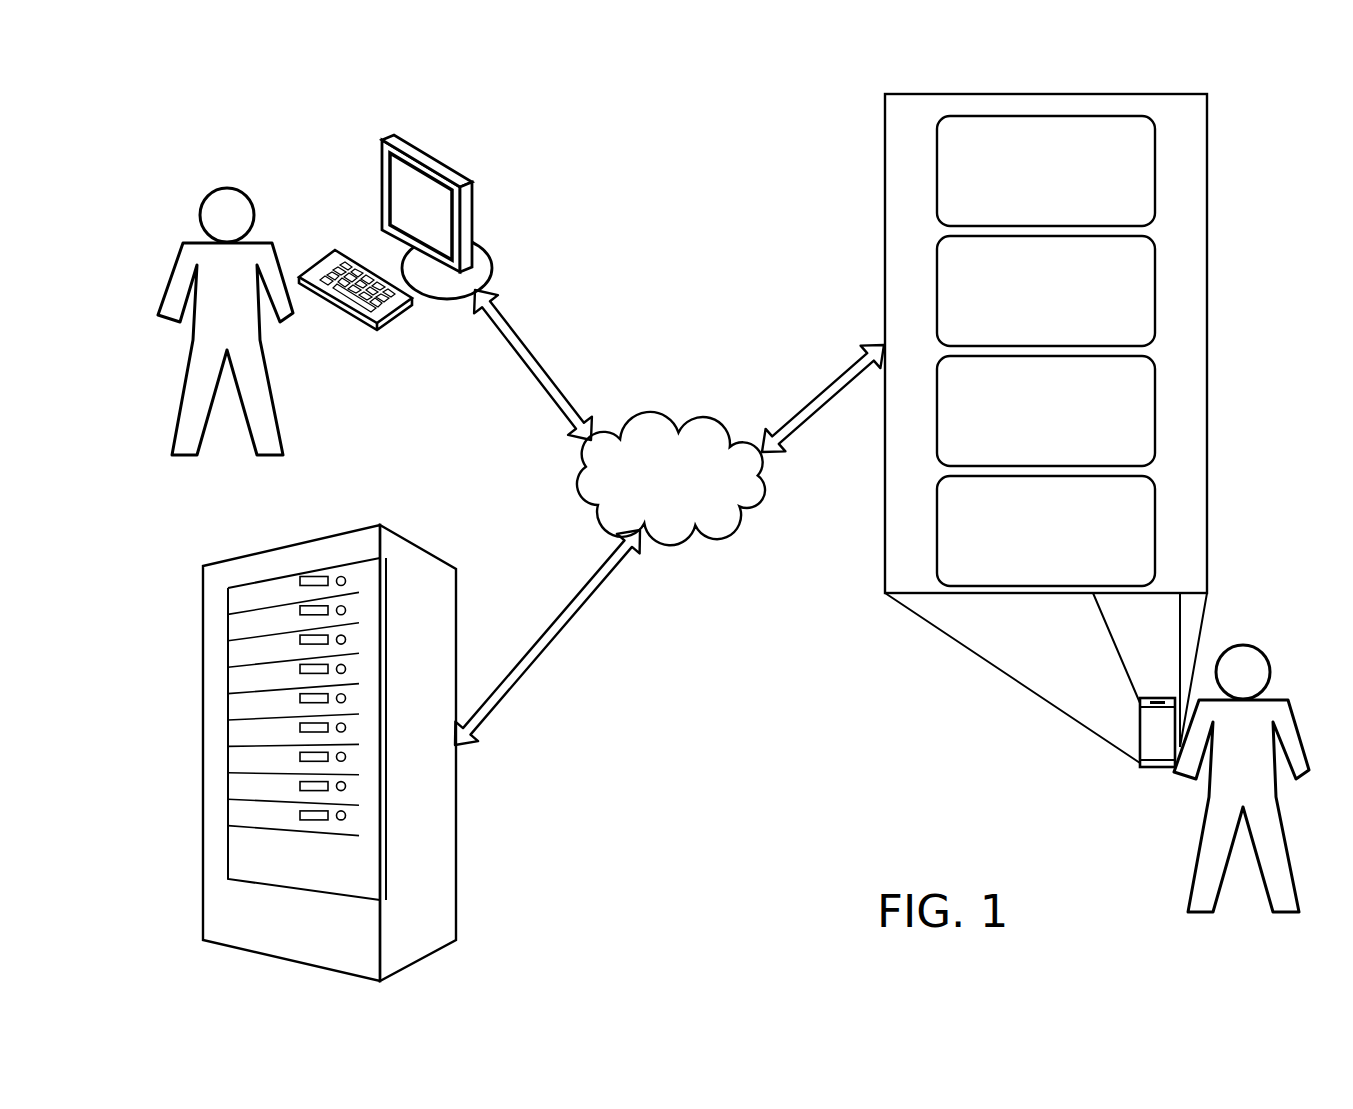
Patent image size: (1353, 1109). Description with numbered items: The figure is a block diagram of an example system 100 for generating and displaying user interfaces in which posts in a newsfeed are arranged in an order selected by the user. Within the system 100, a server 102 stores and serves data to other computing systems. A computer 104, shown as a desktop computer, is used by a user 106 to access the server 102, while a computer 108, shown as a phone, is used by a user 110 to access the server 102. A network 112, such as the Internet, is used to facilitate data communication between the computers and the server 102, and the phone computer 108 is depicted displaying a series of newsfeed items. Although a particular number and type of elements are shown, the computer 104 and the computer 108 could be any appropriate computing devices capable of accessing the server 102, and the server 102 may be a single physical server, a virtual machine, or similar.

The system 100 is at (156, 115).
The server 102 is at (457, 857).
The computer 104 is at (474, 226).
The user 106 is at (227, 190).
The computer 108 is at (1143, 768).
The user 110 is at (1247, 645).
The network 112 is at (579, 484).